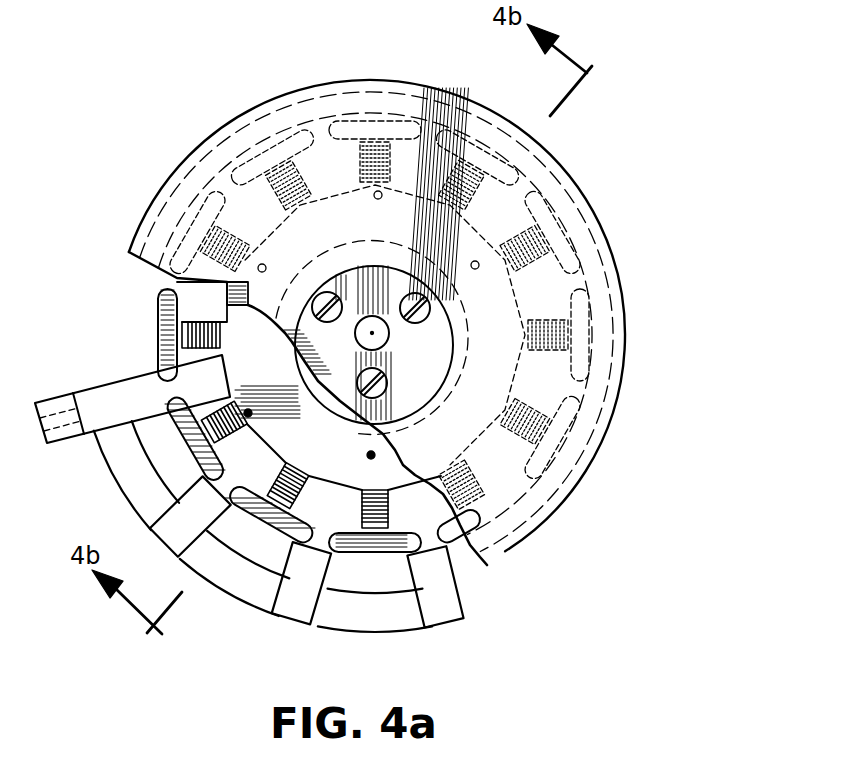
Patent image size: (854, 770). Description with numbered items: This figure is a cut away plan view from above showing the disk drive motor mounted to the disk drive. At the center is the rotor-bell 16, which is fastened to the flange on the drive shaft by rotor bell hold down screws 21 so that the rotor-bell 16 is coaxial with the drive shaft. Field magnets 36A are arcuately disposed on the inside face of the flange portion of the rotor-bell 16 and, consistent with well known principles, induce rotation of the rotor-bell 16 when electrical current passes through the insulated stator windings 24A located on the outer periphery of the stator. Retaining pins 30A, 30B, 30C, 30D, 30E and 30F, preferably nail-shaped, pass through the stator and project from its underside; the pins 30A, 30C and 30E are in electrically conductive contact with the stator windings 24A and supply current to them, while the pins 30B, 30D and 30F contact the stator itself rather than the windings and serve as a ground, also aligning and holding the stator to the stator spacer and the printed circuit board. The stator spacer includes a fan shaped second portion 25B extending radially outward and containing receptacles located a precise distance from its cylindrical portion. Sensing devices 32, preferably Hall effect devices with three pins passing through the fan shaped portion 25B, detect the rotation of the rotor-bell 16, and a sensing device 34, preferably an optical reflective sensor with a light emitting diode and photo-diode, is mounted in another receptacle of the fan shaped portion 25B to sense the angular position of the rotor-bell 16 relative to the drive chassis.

The rotor-bell 16 is at (625, 305).
The field magnets 36A is at (255, 130).
The retaining pin 30A is at (251, 415).
The retaining pin 30B is at (265, 264).
The retaining pin 30C is at (377, 198).
The retaining pin 30D is at (477, 270).
The retaining pin 30E is at (503, 403).
The retaining pin 30F is at (370, 453).
The stator windings 24A is at (200, 323).
The hold down screws 21 is at (404, 297).
The sensing device 34 is at (54, 404).
The fan shaped second portion 25B is at (267, 615).
The sensing devices 32 is at (300, 560).